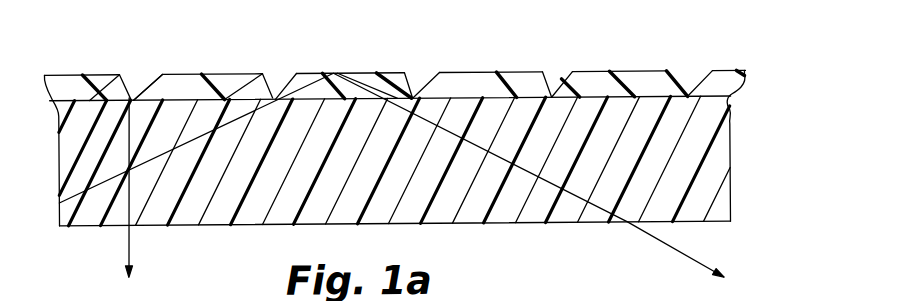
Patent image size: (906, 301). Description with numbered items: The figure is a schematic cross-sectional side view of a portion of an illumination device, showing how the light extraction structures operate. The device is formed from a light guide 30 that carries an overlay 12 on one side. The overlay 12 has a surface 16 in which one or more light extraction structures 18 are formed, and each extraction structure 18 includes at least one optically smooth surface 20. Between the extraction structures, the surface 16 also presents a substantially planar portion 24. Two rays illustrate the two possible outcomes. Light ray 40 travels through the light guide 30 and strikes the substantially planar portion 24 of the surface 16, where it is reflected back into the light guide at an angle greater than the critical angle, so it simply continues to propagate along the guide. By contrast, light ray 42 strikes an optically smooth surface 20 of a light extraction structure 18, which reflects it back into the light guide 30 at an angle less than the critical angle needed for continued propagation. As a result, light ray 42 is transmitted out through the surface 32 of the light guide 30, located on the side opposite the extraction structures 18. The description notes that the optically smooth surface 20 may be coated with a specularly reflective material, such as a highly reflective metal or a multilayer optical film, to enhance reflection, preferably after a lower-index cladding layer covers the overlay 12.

The overlay 12 is at (628, 78).
The surface 16 is at (498, 74).
The light extraction structure 18 is at (140, 85).
The optically smooth surface 20 is at (131, 91).
The substantially planar portion 24 is at (323, 73).
The light guide 30 is at (718, 158).
The surface 32 is at (494, 225).
The light ray 40 is at (655, 238).
The light ray 42 is at (130, 241).